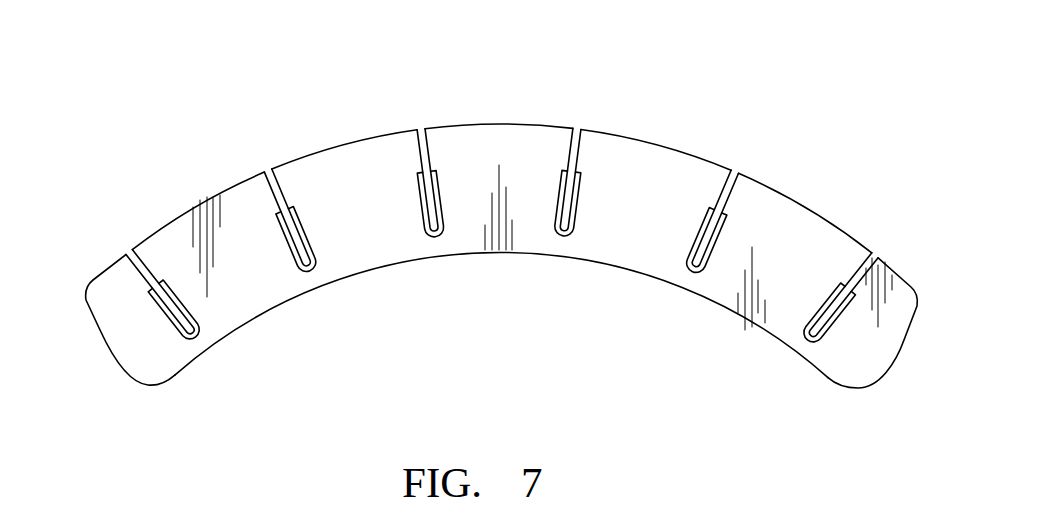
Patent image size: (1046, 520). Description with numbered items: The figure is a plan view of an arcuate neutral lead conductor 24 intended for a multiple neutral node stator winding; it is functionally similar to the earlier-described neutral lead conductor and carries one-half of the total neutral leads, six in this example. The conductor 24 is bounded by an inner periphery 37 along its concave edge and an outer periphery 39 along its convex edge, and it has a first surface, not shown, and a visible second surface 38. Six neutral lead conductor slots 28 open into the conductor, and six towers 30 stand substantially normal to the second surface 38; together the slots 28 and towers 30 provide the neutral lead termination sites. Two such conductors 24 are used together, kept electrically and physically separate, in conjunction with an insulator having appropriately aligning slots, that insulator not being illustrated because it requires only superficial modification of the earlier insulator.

The neutral lead conductor 24 is at (655, 153).
The neutral lead conductor slot 28 is at (267, 177).
The tower 30 is at (293, 257).
The inner periphery 37 is at (384, 267).
The second surface 38 is at (620, 248).
The outer periphery 39 is at (342, 145).